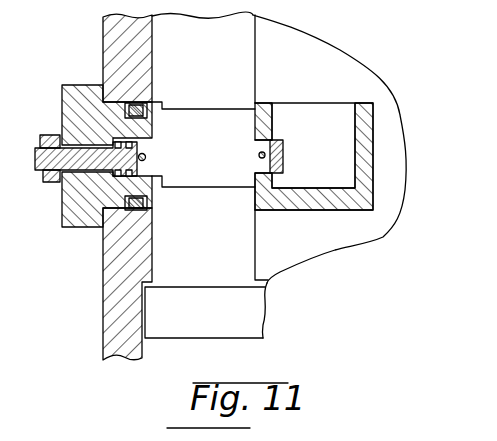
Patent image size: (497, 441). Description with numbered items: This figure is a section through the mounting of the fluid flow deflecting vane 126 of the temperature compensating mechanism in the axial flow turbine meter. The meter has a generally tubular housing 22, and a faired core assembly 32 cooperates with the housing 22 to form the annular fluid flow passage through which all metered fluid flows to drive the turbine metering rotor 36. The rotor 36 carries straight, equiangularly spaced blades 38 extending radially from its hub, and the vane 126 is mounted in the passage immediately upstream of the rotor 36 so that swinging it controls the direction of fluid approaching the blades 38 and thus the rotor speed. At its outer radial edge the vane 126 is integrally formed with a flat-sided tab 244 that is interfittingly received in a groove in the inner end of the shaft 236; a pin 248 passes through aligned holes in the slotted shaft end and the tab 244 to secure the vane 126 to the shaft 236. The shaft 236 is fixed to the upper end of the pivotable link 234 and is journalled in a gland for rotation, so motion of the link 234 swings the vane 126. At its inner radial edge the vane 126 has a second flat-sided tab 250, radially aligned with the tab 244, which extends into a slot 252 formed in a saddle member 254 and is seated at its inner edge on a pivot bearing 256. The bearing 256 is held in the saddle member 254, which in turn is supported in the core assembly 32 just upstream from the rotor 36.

The housing 22 is at (110, 278).
The core assembly 32 is at (255, 58).
The turbine metering rotor 36 is at (280, 322).
The blades 38 is at (192, 333).
The fluid flow deflecting vane 126 is at (229, 112).
The pivotable link 234 is at (43, 183).
The shaft 236 is at (80, 140).
The tab 244 is at (145, 150).
The pin 248 is at (147, 157).
The second tab 250 is at (284, 148).
The slot 252 is at (257, 141).
The saddle member 254 is at (373, 167).
The pivot bearing 256 is at (284, 158).